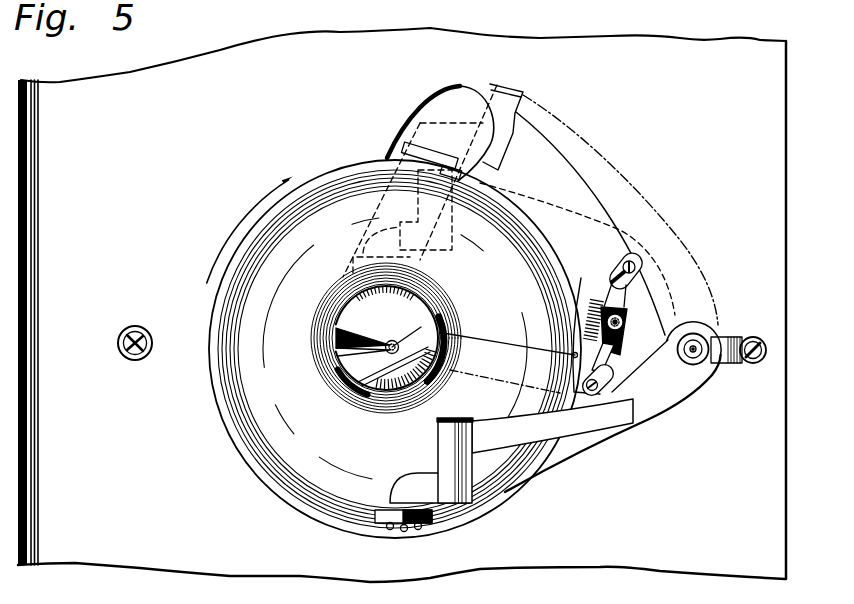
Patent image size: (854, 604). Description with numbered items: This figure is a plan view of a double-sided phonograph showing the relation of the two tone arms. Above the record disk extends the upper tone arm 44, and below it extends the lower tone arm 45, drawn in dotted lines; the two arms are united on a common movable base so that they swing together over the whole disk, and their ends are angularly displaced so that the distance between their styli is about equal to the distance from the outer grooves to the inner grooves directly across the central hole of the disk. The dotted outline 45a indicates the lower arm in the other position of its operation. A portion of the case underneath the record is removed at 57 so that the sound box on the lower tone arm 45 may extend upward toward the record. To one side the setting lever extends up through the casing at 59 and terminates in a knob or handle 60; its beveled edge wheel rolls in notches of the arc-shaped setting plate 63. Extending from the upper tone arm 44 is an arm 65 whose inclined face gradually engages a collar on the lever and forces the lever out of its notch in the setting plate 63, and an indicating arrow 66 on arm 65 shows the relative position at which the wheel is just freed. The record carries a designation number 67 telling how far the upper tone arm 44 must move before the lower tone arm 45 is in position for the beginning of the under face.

The tone arm 44 is at (545, 435).
The tone arm 45 is at (532, 223).
The arm in alternate position 45a is at (620, 210).
The removed portion of the case 57 is at (424, 128).
The casing opening for lever 59 is at (622, 338).
The knob or handle 60 is at (627, 321).
The setting plate 63 is at (606, 273).
The arm 65 is at (614, 389).
The indicating arrow 66 is at (611, 352).
The designation number 67 is at (596, 303).